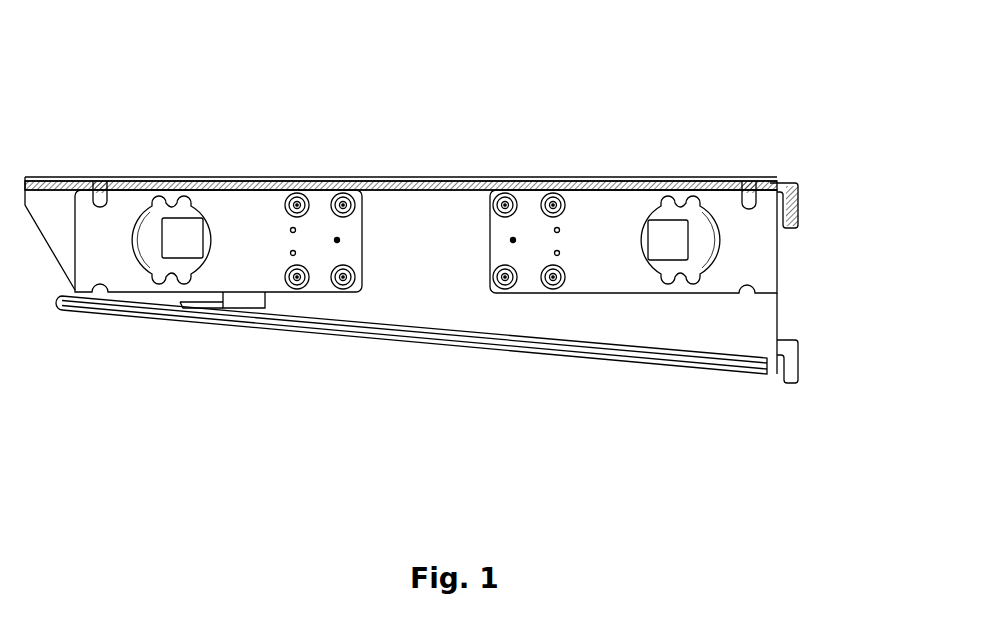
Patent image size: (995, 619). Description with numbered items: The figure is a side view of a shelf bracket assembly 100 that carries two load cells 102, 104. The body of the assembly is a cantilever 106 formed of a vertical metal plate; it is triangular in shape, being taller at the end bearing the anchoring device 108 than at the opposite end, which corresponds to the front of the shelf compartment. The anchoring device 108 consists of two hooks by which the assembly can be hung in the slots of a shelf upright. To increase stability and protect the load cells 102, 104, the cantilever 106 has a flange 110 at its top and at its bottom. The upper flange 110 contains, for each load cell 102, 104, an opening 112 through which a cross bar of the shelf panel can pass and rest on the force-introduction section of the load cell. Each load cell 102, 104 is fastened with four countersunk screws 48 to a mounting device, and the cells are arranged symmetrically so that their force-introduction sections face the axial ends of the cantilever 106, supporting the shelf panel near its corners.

The shelf bracket assembly 100 is at (477, 68).
The load cell 102 is at (610, 305).
The load cell 104 is at (282, 303).
The cantilever 106 is at (416, 302).
The anchoring device 108 is at (812, 166).
The flange 110 is at (437, 178).
The opening 112 is at (105, 172).
The countersunk screw 48 is at (297, 200).